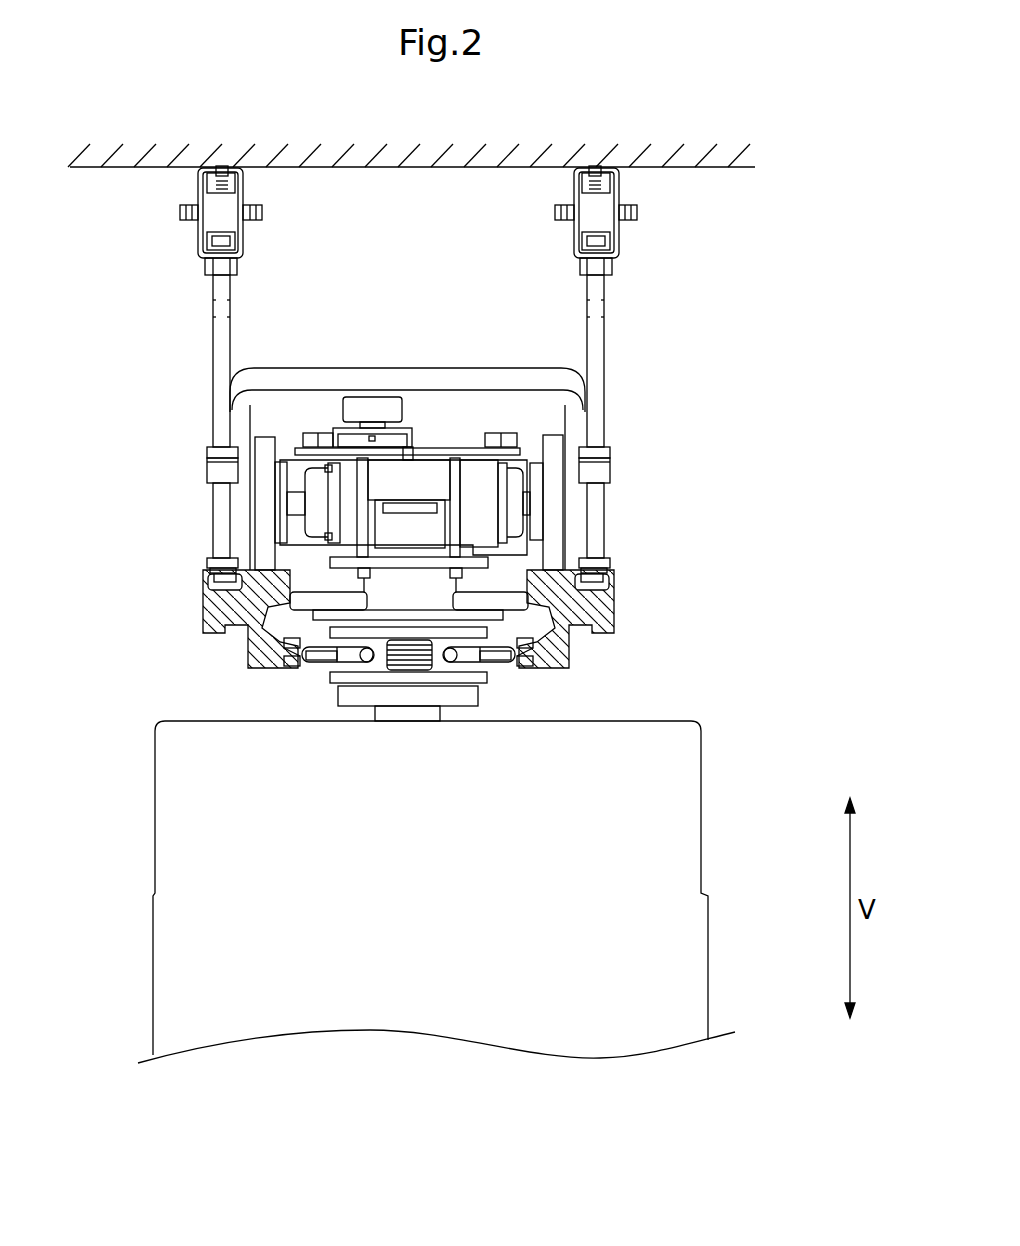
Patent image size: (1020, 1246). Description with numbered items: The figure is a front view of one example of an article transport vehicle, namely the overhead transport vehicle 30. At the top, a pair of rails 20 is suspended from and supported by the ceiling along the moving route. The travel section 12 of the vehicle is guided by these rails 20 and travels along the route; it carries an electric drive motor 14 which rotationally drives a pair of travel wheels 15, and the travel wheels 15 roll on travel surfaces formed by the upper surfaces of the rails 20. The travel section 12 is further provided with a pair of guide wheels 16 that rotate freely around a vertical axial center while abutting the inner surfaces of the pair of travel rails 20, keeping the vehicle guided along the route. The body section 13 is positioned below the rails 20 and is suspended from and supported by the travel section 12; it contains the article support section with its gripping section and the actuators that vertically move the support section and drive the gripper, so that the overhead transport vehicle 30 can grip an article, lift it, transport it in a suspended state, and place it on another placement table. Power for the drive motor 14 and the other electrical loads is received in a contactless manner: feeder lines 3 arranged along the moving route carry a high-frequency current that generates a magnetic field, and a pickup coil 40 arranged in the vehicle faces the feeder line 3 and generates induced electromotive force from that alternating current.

The feeder line 3 is at (323, 660).
The travel section 12 is at (438, 422).
The body section 13 is at (683, 940).
The drive motor 14 is at (290, 458).
The travel wheels 15 is at (262, 505).
The guide wheels 16 is at (497, 598).
The rails 20 is at (225, 600).
The overhead transport vehicle 30 is at (717, 413).
The pickup coil 40 is at (420, 660).